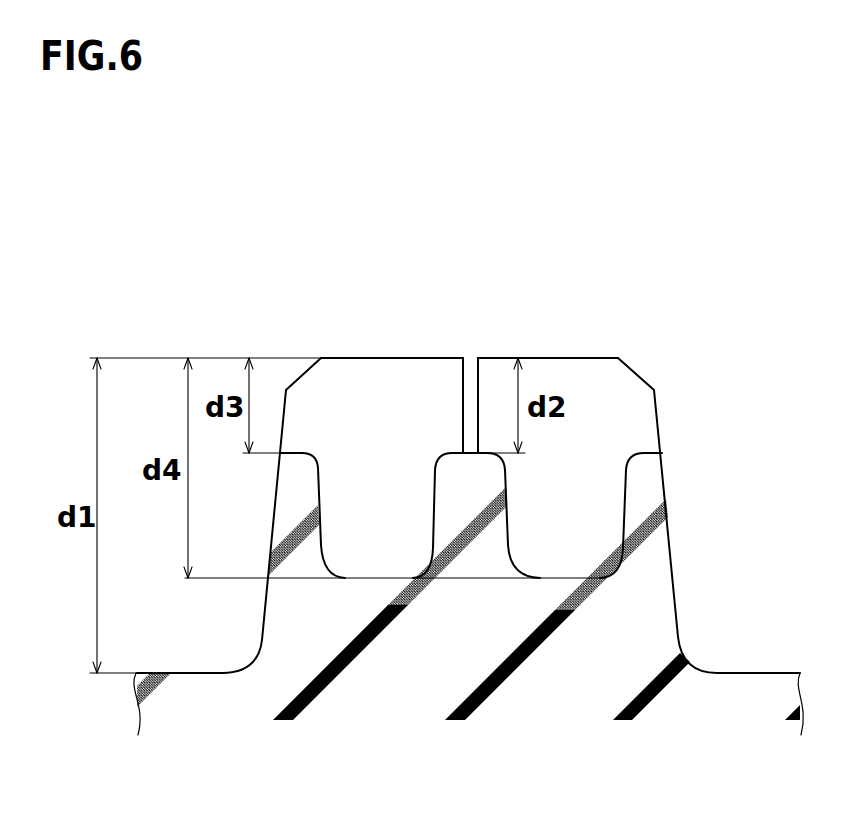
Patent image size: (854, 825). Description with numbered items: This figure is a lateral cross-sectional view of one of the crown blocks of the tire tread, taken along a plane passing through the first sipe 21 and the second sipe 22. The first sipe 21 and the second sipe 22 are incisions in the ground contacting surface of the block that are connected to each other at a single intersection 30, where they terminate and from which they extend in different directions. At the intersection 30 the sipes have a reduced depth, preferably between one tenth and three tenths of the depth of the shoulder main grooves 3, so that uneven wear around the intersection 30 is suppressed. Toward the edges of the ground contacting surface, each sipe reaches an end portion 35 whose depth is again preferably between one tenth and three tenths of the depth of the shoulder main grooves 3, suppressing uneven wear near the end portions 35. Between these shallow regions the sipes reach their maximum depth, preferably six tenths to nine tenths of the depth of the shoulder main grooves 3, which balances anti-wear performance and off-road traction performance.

The shoulder main groove 3 is at (222, 639).
The first sipe 21 is at (377, 408).
The second sipe 22 is at (588, 413).
The intersection 30 is at (471, 356).
The end portion 35 is at (295, 447).